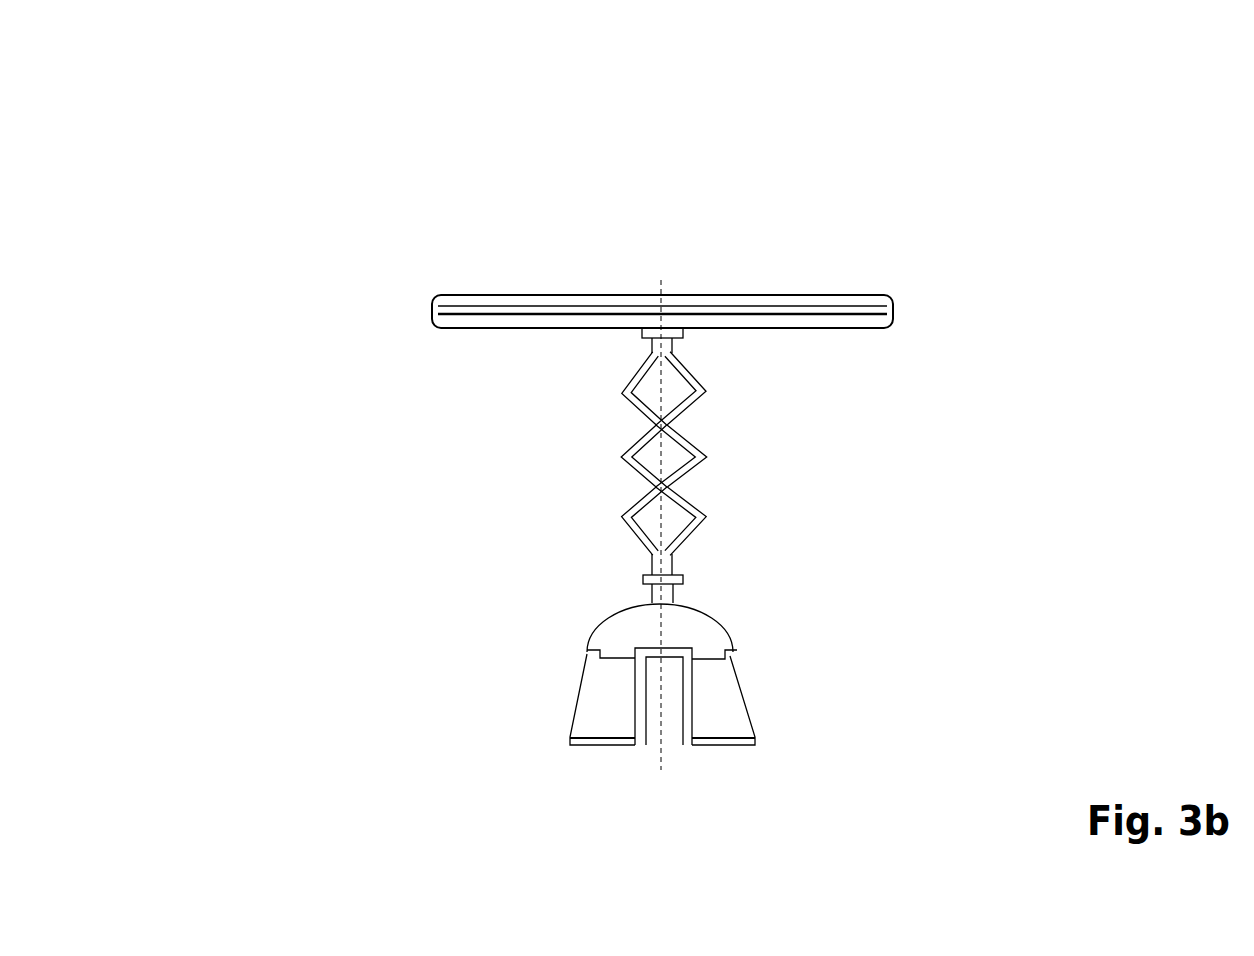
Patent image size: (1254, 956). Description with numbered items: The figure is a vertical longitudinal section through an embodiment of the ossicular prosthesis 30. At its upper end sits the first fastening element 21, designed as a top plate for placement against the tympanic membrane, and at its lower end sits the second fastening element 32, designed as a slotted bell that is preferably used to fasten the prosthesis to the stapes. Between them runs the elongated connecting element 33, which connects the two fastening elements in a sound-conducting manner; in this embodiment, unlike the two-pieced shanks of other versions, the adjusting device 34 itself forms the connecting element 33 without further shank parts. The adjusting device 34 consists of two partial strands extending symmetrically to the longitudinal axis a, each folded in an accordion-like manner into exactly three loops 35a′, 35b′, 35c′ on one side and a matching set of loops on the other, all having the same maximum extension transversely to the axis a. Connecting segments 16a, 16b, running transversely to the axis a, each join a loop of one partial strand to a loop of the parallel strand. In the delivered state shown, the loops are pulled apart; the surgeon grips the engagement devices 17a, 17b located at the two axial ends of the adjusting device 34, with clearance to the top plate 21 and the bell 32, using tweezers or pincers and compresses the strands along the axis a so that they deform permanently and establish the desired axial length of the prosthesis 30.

The ossicular prosthesis 30 is at (328, 124).
The first fastening element 21 is at (840, 293).
The engagement device 17a is at (647, 338).
The engagement device 17b is at (650, 580).
The connecting segment 16a is at (702, 378).
The connecting segment 16b is at (702, 535).
The elongated connecting element 33 is at (620, 456).
The adjusting device 34 is at (711, 451).
The loop 35a′ is at (626, 381).
The loop 35b′ is at (626, 453).
The loop 35c′ is at (626, 513).
The second fastening element 32 is at (596, 703).
The longitudinal axis a is at (660, 762).